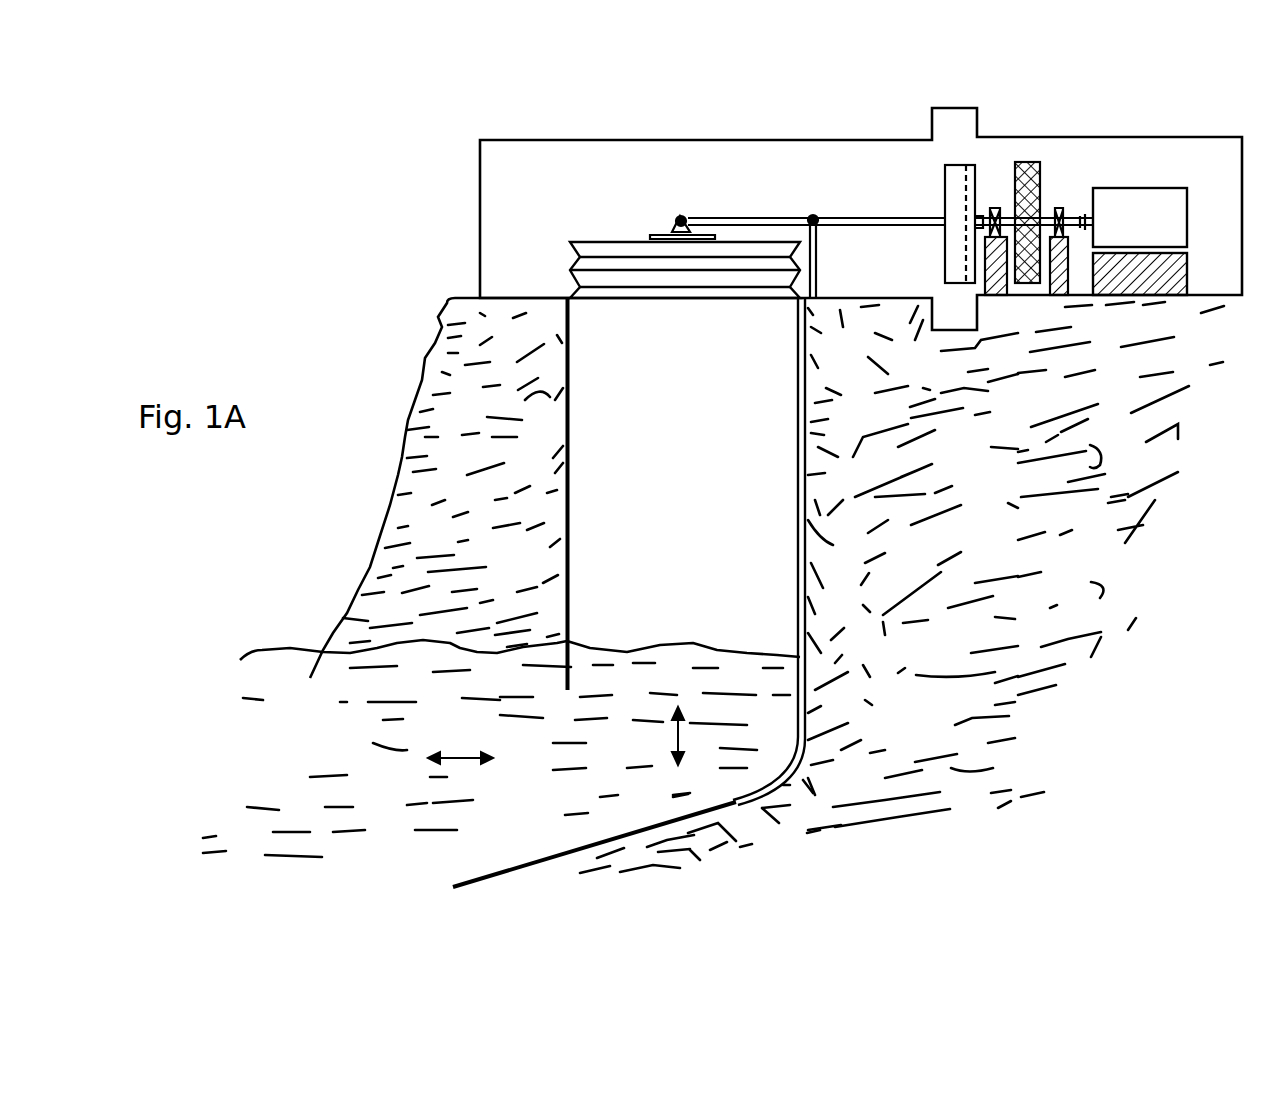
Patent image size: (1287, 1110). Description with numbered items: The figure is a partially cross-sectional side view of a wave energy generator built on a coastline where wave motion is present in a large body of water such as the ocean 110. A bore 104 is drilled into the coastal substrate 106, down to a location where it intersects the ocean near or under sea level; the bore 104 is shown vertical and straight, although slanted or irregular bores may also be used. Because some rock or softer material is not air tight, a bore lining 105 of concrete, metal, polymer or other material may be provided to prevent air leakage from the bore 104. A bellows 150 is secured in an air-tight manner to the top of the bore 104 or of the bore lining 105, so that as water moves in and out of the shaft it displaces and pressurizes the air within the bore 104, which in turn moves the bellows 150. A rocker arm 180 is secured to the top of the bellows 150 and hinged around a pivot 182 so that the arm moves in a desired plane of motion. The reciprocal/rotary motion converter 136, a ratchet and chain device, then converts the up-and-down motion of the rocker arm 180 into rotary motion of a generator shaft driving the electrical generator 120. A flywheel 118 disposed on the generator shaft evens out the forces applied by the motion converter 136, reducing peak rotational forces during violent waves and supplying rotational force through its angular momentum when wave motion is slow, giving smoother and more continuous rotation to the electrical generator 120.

The bore 104 is at (691, 485).
The bore lining 105 is at (563, 415).
The coastal substrate 106 is at (472, 472).
The ocean 110 is at (501, 748).
The flywheel 118 is at (1022, 162).
The electrical generator 120 is at (1143, 210).
The reciprocal/rotary motion converter 136 is at (945, 178).
The bellows 150 is at (618, 277).
The rocker arm 180 is at (778, 218).
The pivot 182 is at (828, 218).